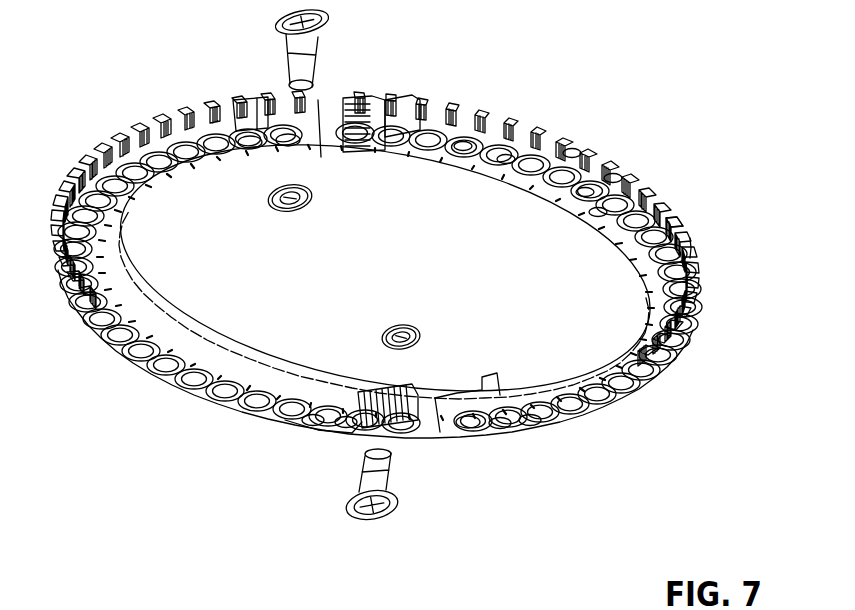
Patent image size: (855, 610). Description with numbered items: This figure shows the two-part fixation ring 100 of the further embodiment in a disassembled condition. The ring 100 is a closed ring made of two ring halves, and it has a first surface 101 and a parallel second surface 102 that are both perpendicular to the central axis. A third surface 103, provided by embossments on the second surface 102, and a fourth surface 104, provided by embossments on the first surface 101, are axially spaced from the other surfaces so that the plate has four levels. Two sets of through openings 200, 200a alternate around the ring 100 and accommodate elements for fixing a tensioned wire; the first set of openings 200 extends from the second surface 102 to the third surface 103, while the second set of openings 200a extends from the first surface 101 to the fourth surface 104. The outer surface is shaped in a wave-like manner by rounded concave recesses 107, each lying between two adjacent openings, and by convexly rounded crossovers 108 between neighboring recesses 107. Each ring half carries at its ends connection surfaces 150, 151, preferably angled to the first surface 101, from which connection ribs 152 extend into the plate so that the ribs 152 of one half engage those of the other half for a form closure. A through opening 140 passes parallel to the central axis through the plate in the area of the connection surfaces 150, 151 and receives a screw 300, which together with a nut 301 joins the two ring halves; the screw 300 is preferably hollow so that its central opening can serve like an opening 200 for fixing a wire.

The fixation ring 100 is at (685, 350).
The first surface 101 is at (572, 145).
The second surface 102 is at (464, 140).
The third surface 103 is at (505, 152).
The fourth surface 104 is at (612, 172).
The recess 107 is at (670, 230).
The crossover 108 is at (690, 257).
The through opening 140 is at (366, 120).
The connection surface 150 is at (455, 392).
The connection surface 151 is at (285, 102).
The connection rib 152 is at (400, 393).
The through opening 200 is at (600, 208).
The through opening 200a is at (587, 187).
The screw 300 is at (322, 27).
The nut 301 is at (302, 204).